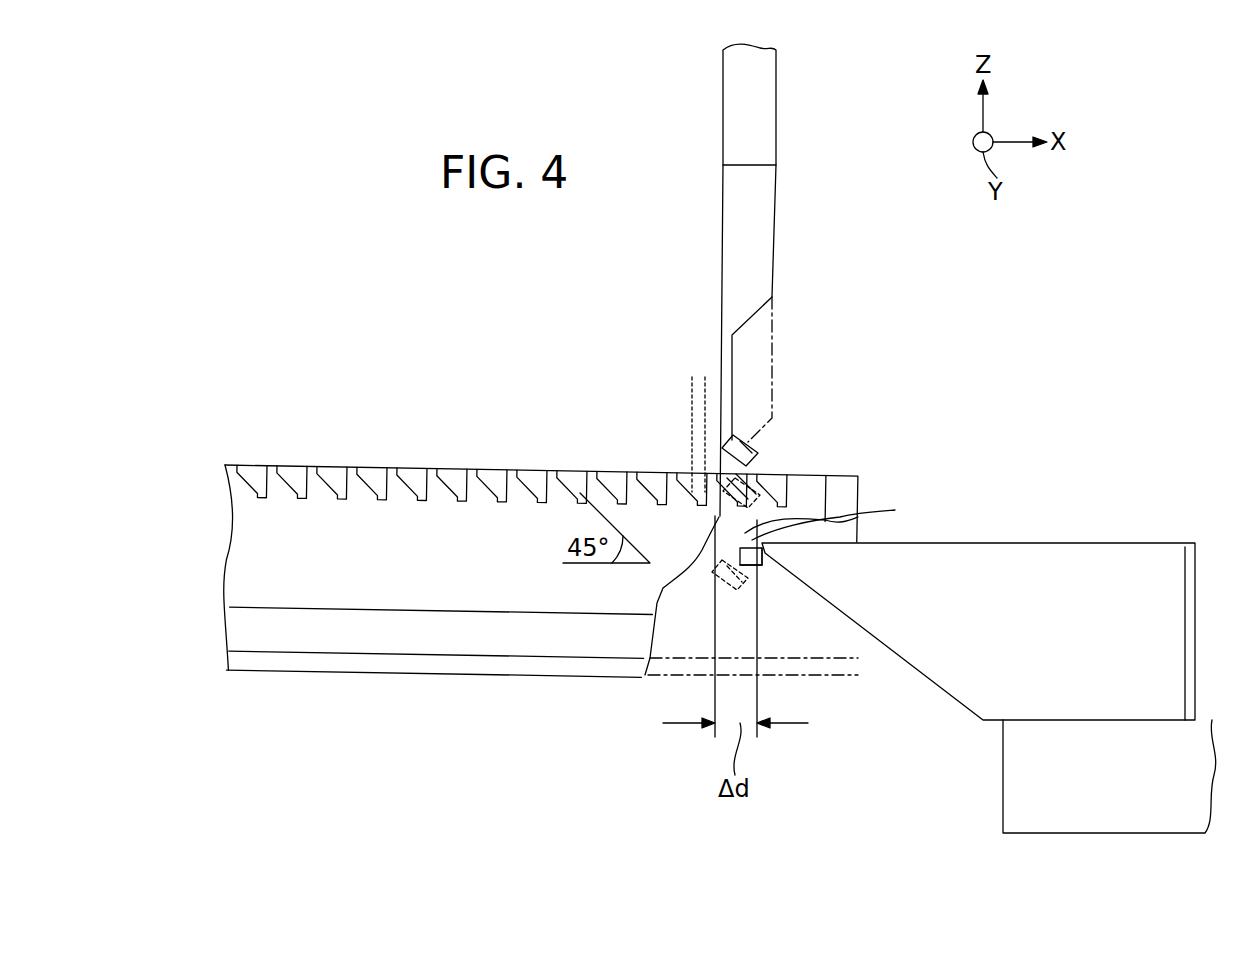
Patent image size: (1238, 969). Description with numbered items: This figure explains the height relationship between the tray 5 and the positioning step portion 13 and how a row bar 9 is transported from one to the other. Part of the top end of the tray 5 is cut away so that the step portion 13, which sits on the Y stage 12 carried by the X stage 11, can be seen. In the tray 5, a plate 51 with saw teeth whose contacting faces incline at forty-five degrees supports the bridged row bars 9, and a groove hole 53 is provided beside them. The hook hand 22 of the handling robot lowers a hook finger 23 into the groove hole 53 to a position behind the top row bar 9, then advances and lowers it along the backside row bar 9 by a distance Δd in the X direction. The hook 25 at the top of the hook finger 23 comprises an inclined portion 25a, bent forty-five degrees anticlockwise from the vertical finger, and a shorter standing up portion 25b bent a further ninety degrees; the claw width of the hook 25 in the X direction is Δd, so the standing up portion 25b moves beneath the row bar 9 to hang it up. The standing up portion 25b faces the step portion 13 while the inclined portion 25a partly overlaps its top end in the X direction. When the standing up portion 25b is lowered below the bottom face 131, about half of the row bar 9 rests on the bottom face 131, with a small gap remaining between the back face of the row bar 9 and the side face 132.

The tray 5 is at (428, 703).
The plate 51 is at (441, 505).
The groove hole 53 is at (387, 606).
The hook hand 22 is at (768, 82).
The hook finger 23 is at (768, 212).
The hook 25 is at (723, 568).
The inclined portion 25a is at (737, 460).
The standing up portion 25b is at (752, 445).
The row bar 9 is at (745, 478).
The Y stage 12 is at (1133, 557).
The positioning step portion 13 is at (765, 560).
The bottom face 131 is at (757, 563).
The side face 132 is at (775, 552).
The X stage 11 is at (1050, 817).